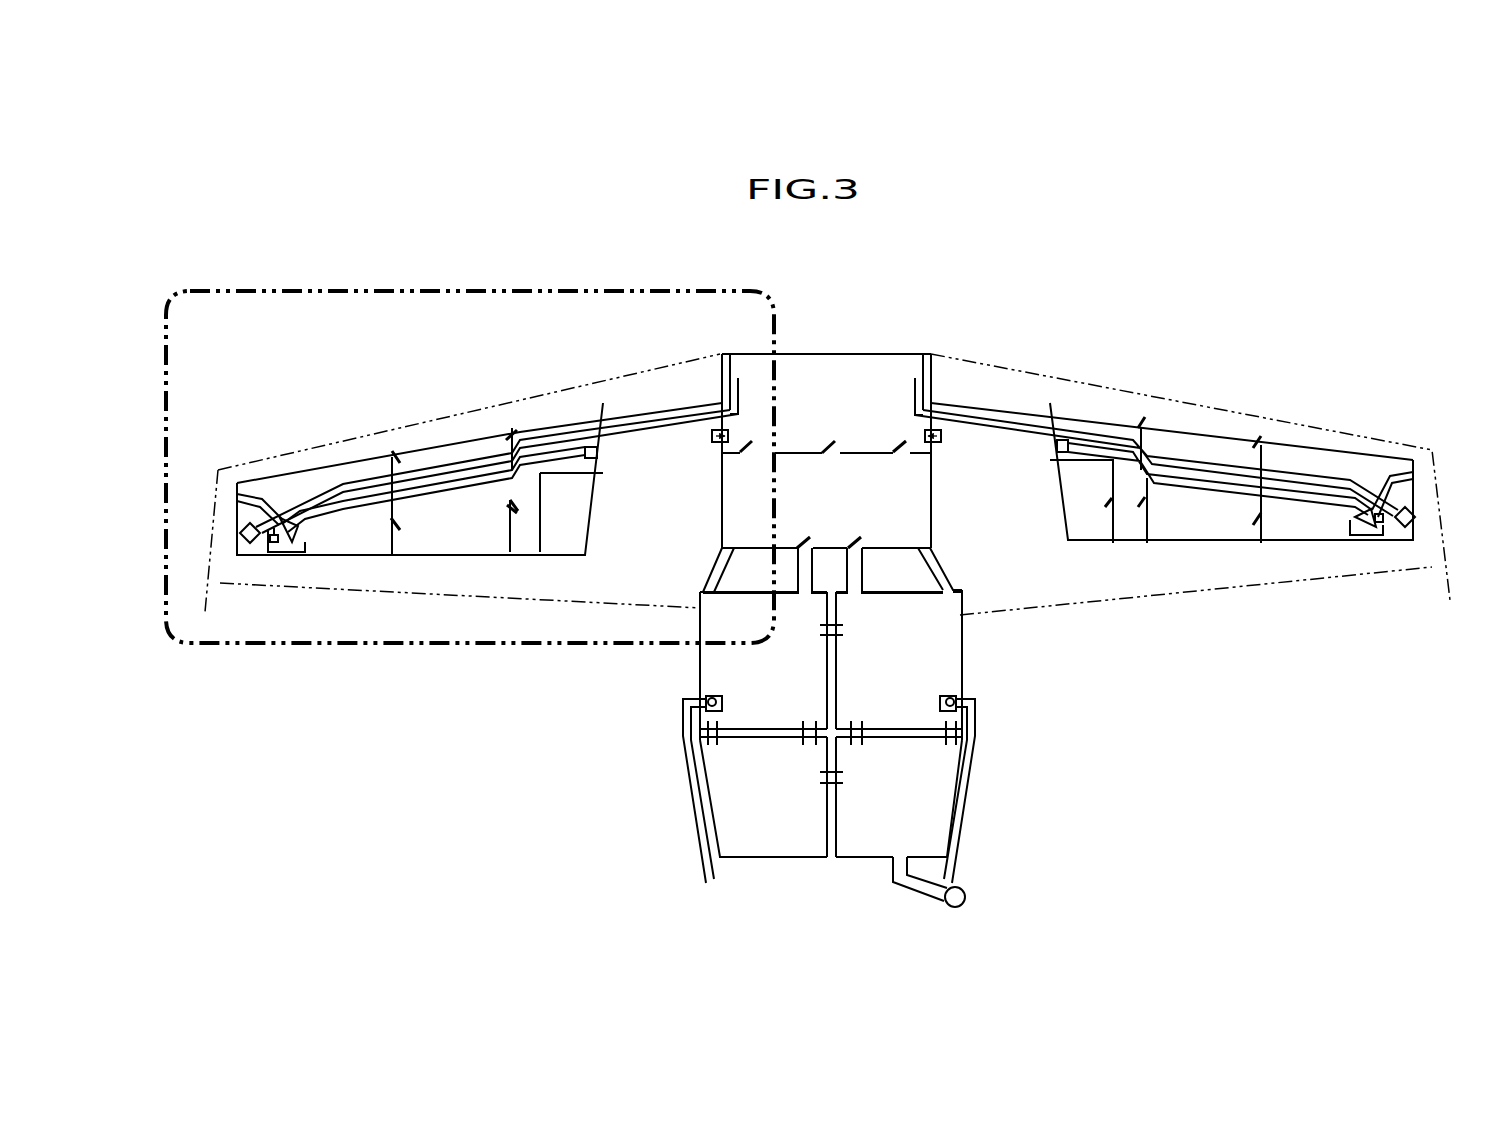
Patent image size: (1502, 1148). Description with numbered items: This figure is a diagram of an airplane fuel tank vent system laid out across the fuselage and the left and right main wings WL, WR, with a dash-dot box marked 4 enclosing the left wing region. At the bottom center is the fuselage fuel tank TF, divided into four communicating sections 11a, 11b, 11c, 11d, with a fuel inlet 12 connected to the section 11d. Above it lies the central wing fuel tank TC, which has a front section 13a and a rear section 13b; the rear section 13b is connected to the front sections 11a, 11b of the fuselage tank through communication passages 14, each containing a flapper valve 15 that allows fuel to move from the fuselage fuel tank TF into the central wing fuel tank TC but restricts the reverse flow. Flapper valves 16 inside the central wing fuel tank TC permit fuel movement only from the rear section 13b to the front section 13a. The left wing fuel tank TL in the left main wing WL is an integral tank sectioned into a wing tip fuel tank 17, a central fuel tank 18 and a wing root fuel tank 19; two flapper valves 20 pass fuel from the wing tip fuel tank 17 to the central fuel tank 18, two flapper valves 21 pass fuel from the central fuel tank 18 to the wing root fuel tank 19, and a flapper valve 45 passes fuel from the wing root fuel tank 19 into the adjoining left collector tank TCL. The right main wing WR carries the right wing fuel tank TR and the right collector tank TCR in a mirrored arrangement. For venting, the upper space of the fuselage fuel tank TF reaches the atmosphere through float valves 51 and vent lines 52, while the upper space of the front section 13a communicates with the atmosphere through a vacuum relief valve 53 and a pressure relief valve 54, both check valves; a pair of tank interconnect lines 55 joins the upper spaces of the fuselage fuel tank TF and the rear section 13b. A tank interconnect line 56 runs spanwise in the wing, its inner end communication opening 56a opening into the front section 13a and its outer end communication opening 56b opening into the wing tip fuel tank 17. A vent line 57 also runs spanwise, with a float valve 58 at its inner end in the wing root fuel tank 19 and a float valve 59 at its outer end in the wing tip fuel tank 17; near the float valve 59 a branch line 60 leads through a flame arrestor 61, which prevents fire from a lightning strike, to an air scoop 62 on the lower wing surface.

The region shown in FIG. 4 is at (338, 658).
The section of fuselage fuel tank 11a is at (801, 671).
The section of fuselage fuel tank 11b is at (921, 669).
The section of fuselage fuel tank 11c is at (788, 814).
The section of fuselage fuel tank 11d is at (924, 811).
The fuel inlet 12 is at (967, 897).
The front section of central wing fuel tank 13a is at (853, 411).
The rear section of central wing fuel tank 13b is at (849, 501).
The communication passage 14 is at (858, 578).
The flapper valve 15 is at (855, 537).
The flapper valve 16 is at (898, 449).
The wing tip fuel tank 17 is at (1330, 463).
The central fuel tank 18 is at (1203, 450).
The wing root fuel tank 19 is at (1092, 417).
The flapper valve 20 is at (1262, 510).
The flapper valve 21 is at (1147, 503).
The flapper valve 45 is at (1110, 500).
The float valve 51 is at (940, 698).
The vent line 52 is at (975, 763).
The vacuum relief valve 53 is at (941, 437).
The pressure relief valve 54 is at (712, 437).
The tank interconnect line 55 is at (940, 575).
The tank interconnect line 56 is at (1238, 512).
The inner end communication opening 56a is at (922, 382).
The outer end communication opening 56b is at (1405, 478).
The vent line 57 is at (1210, 440).
The float valve 58 is at (1060, 449).
The float valve 59 is at (1405, 528).
The branch line 60 is at (1370, 538).
The flame arrestor 61 is at (1353, 510).
The air scoop 62 is at (1420, 484).
The central wing fuel tank TC is at (772, 345).
The left wing fuel tank TL is at (366, 447).
The right wing fuel tank TR is at (1297, 439).
The left collector tank TCL is at (590, 488).
The right collector tank TCR is at (1073, 530).
The fuselage fuel tank TF is at (694, 656).
The left main wing WL is at (505, 600).
The right main wing WR is at (1070, 597).